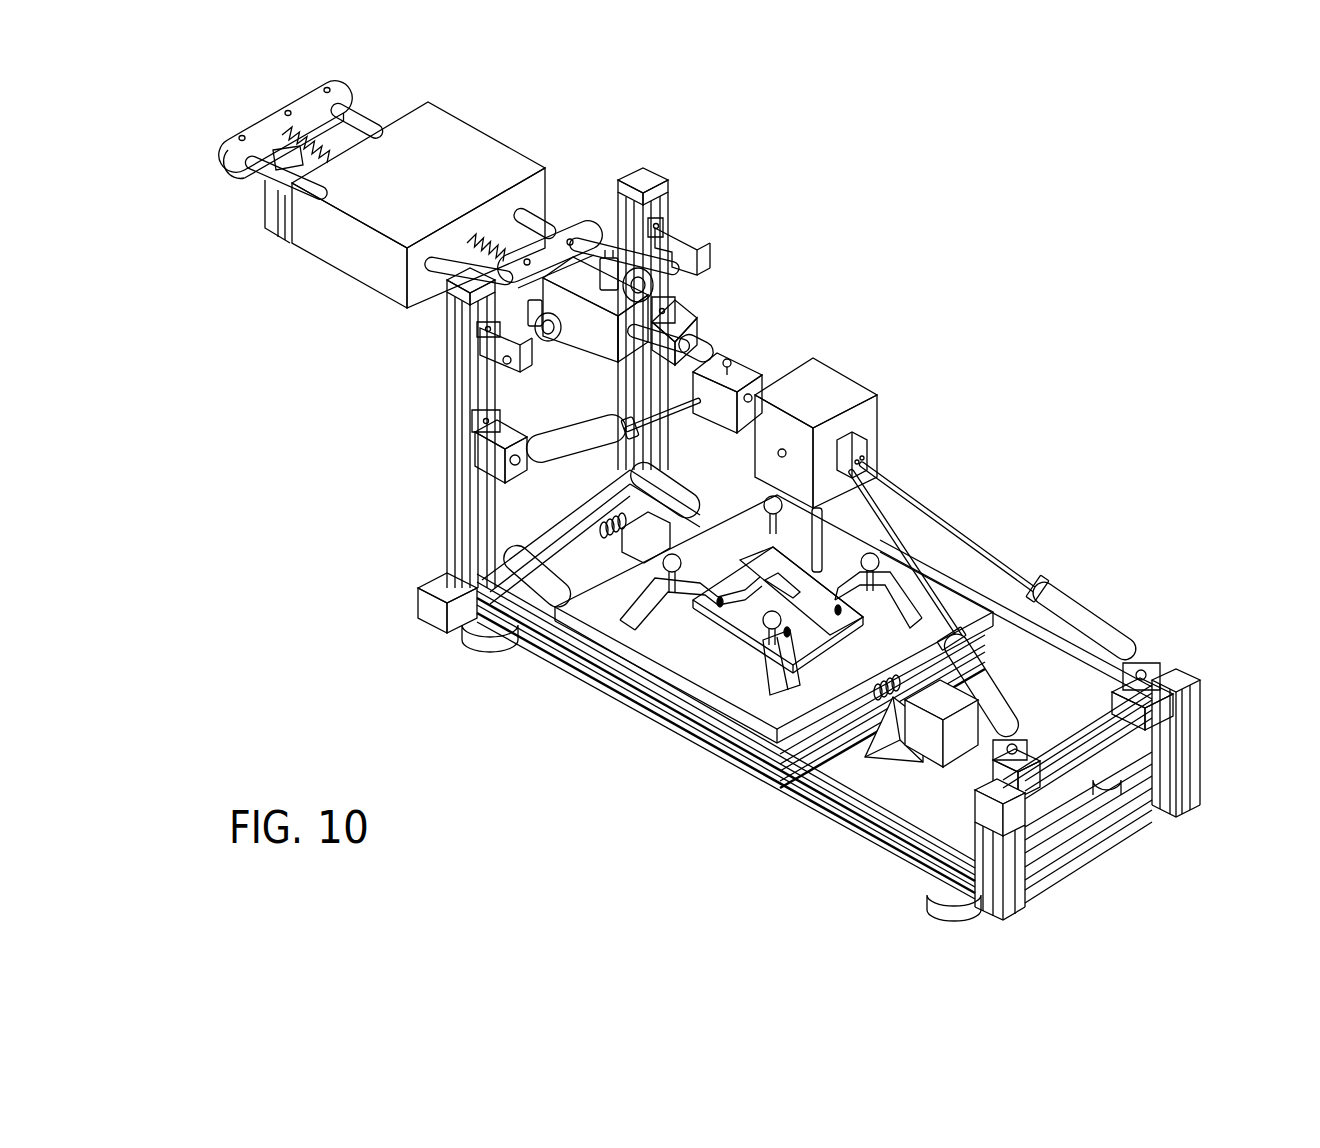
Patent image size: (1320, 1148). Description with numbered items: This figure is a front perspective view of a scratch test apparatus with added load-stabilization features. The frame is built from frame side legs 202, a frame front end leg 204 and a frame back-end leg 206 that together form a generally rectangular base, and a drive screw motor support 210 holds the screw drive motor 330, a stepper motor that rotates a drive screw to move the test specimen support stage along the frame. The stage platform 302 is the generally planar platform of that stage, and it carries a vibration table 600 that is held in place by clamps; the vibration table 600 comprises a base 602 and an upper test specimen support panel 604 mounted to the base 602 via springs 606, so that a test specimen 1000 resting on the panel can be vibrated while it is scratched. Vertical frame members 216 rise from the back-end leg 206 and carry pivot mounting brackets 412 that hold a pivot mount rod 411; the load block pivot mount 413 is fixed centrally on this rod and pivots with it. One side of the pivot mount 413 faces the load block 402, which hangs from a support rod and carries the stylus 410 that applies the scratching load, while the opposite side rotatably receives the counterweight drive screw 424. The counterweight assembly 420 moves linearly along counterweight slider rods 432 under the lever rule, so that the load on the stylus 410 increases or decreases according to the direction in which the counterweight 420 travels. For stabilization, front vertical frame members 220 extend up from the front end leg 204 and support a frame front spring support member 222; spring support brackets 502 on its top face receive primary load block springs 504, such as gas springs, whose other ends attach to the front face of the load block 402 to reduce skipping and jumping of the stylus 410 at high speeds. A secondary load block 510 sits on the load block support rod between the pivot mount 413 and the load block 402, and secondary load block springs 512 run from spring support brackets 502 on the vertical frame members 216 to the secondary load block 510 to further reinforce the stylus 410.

The frame side legs 202 is at (680, 727).
The frame front end leg 204 is at (1100, 846).
The frame back-end leg 206 is at (418, 595).
The drive screw motor support 210 is at (862, 793).
The vertical frame members 216 is at (668, 197).
The front vertical frame members 220 is at (1200, 775).
The frame front spring support member 222 is at (1200, 688).
The stage platform 302 is at (617, 633).
The screw drive motor 330 is at (960, 750).
The load block 402 is at (837, 387).
The stylus 410 is at (817, 550).
The pivot mount rod 411 is at (668, 268).
The pivot mounting brackets 412 is at (680, 247).
The load block pivot mount 413 is at (598, 335).
The counterweight assembly 420 is at (493, 158).
The counterweight drive screw 424 is at (285, 133).
The counterweight slider rods 432 is at (353, 117).
The spring support brackets 502 is at (677, 330).
The primary load block springs 504 is at (1063, 598).
The secondary load block 510 is at (718, 400).
The secondary load block springs 512 is at (697, 348).
The vibration table 600 is at (771, 595).
The base 602 is at (837, 620).
The upper test specimen support panel 604 is at (797, 612).
The springs 606 is at (741, 597).
The test specimen 1000 is at (777, 587).